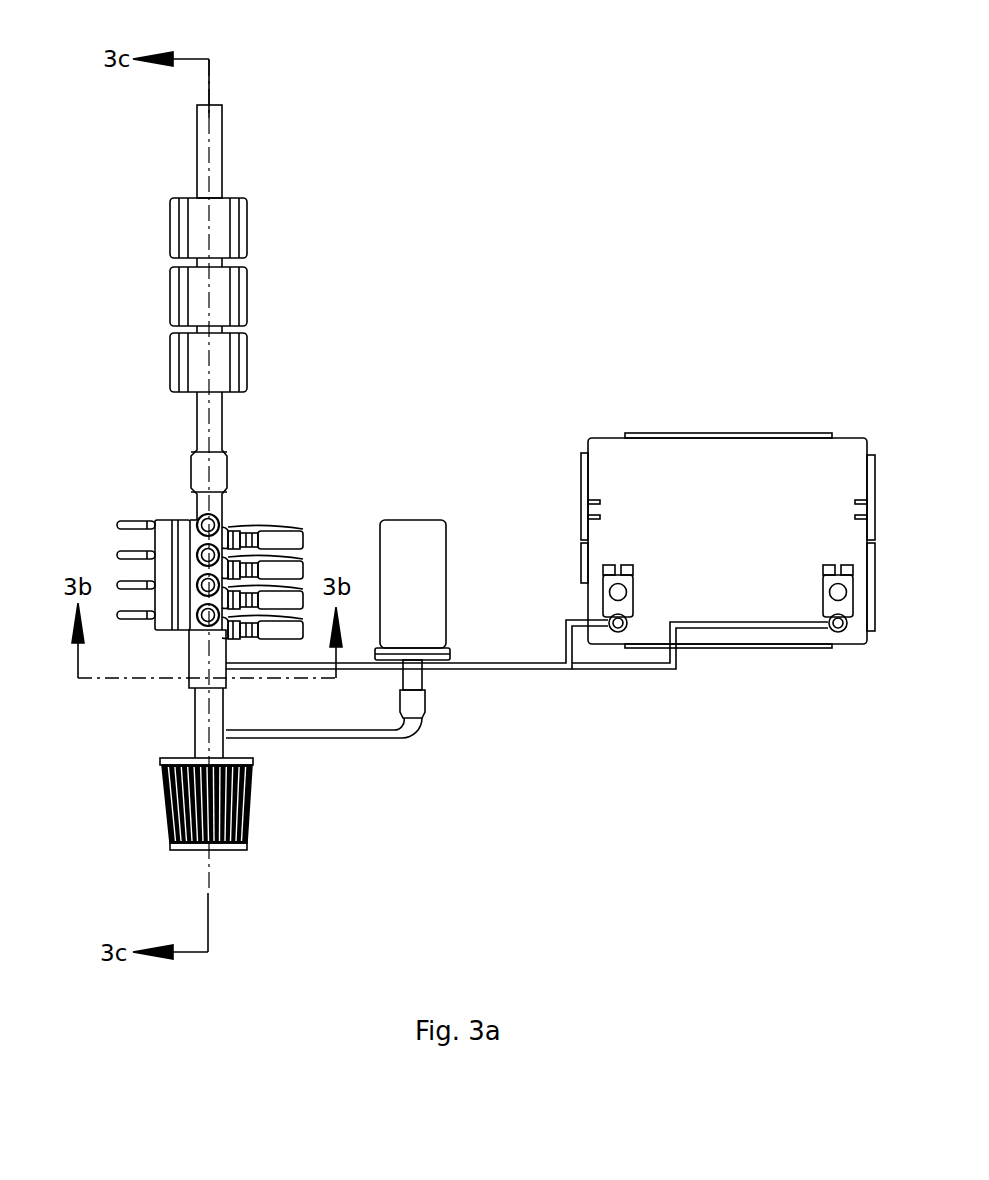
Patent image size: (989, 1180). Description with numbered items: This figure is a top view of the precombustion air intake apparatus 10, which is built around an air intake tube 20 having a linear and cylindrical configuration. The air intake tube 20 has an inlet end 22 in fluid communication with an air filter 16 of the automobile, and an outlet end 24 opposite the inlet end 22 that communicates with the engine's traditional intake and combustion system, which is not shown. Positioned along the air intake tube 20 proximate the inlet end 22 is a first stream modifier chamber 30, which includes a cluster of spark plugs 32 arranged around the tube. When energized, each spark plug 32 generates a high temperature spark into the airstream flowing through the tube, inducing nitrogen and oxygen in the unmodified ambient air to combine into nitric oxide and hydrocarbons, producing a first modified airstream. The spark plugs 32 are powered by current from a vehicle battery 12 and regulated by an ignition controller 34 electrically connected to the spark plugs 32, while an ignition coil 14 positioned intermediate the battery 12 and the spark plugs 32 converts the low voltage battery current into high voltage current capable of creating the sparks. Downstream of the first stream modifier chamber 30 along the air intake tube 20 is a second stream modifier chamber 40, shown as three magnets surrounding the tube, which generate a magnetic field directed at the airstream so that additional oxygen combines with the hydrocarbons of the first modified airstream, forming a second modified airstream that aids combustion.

The precombustion air intake apparatus 10 is at (510, 276).
The vehicle battery 12 is at (748, 462).
The ignition coil 14 is at (422, 578).
The air filter 16 is at (167, 817).
The air intake tube 20 is at (235, 158).
The inlet end 22 is at (203, 748).
The outlet end 24 is at (215, 103).
The first stream modifier chamber 30 is at (284, 497).
The spark plugs 32 is at (200, 521).
The ignition controller 34 is at (155, 540).
The second stream modifier chamber 40 is at (289, 288).